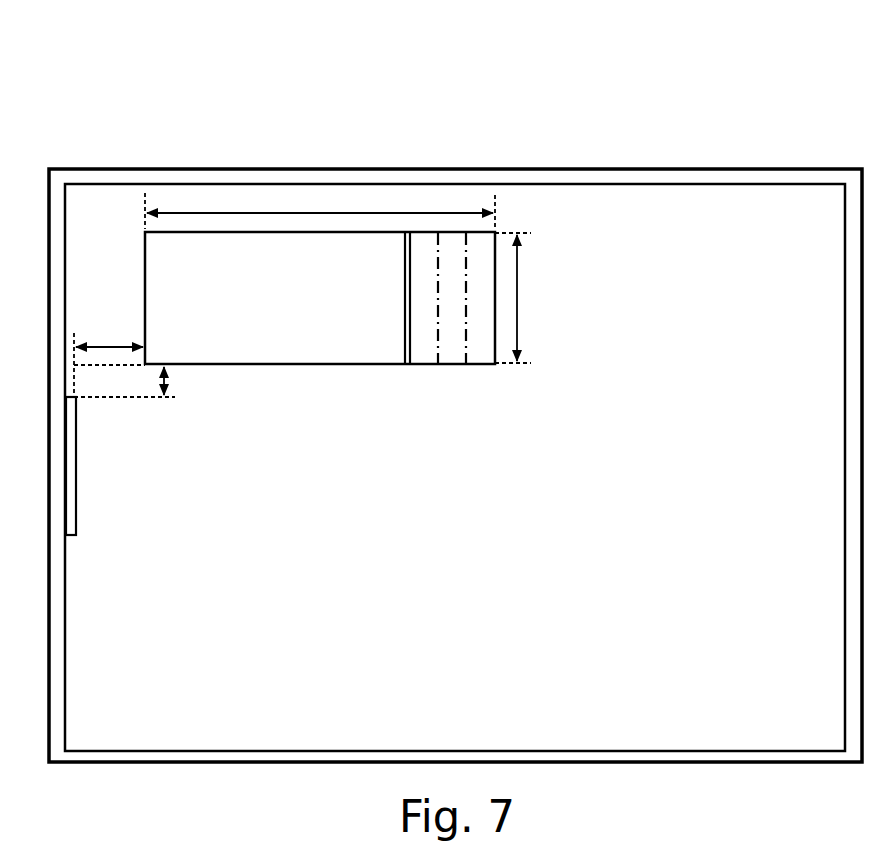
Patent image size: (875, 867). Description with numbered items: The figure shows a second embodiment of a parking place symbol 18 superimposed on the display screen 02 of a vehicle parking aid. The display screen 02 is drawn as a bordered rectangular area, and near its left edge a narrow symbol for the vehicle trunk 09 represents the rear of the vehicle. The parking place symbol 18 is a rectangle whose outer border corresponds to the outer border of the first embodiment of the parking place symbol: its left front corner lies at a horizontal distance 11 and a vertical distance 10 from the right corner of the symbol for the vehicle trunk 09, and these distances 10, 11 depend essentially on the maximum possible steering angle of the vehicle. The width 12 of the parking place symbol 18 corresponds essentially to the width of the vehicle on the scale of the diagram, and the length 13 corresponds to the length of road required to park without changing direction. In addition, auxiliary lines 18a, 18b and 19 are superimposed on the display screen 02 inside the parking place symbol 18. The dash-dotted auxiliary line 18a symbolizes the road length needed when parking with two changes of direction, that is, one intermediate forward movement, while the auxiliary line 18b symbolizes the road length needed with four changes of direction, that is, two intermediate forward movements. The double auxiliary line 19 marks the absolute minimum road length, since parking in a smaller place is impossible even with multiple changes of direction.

The display screen 02 is at (681, 146).
The symbol for the vehicle trunk 09 is at (72, 520).
The distance 10 is at (170, 382).
The distance 11 is at (108, 346).
The width of the parking place symbol 12 is at (518, 298).
The length of the parking place symbol 13 is at (315, 213).
The parking place symbol 18 is at (343, 358).
The auxiliary line 18a is at (438, 350).
The auxiliary line 18b is at (466, 350).
The auxiliary line 19 is at (403, 283).